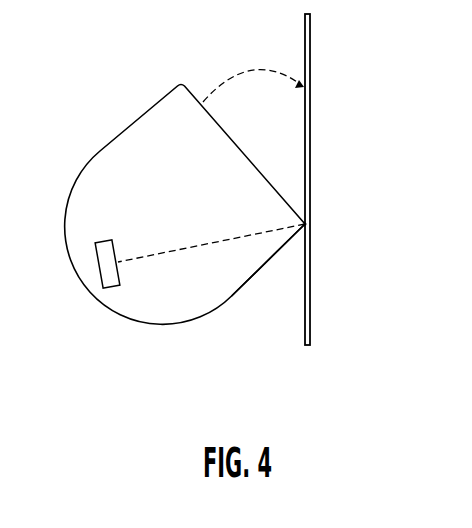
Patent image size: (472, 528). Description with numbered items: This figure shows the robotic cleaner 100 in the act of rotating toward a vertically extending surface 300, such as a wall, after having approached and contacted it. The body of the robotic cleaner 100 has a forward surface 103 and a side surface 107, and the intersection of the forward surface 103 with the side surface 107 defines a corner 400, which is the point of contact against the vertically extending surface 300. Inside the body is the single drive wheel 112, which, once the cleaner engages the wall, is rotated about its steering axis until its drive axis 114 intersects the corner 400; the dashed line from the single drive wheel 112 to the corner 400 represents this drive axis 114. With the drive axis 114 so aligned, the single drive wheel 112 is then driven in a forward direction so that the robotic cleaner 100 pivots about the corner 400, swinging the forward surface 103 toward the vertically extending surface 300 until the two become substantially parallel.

The robotic cleaner 100 is at (87, 82).
The forward surface 103 is at (264, 167).
The side surface 107 is at (213, 320).
The single drive wheel 112 is at (102, 276).
The drive axis 114 is at (230, 242).
The vertically extending surface 300 is at (311, 145).
The corner 400 is at (309, 226).